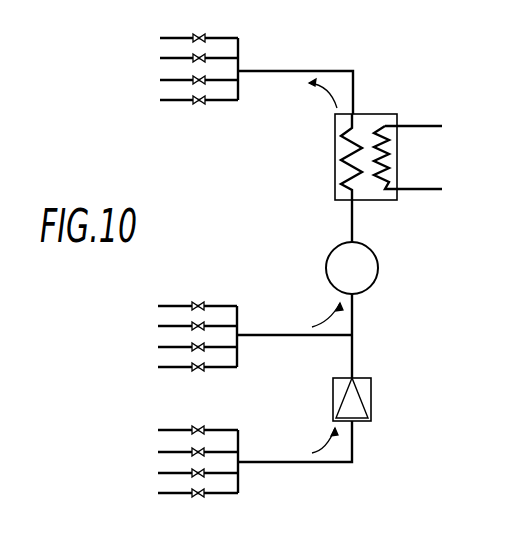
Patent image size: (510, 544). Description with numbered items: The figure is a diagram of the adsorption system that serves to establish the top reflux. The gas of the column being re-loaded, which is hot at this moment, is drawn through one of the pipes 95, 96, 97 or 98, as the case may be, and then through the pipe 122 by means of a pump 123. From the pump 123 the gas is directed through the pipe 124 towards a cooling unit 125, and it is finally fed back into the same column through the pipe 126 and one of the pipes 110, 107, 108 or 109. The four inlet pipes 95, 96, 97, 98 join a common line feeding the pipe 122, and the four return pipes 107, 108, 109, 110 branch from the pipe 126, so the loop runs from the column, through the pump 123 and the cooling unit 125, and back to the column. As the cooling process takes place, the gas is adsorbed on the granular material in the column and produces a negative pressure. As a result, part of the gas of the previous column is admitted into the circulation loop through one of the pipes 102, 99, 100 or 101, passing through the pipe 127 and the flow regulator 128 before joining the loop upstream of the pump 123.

The pipe 95 is at (170, 367).
The pipe 96 is at (170, 347).
The pipe 97 is at (162, 326).
The pipe 98 is at (168, 306).
The pipe 99 is at (168, 473).
The pipe 100 is at (165, 452).
The pipe 101 is at (168, 430).
The pipe 102 is at (178, 493).
The pipe 107 is at (170, 80).
The pipe 108 is at (168, 58).
The pipe 109 is at (168, 38).
The pipe 110 is at (178, 100).
The pipe 122 is at (285, 335).
The pump 123 is at (360, 260).
The pipe 124 is at (352, 223).
The cooling unit 125 is at (397, 155).
The pipe 126 is at (353, 71).
The pipe 127 is at (352, 456).
The flow regulator 128 is at (371, 388).